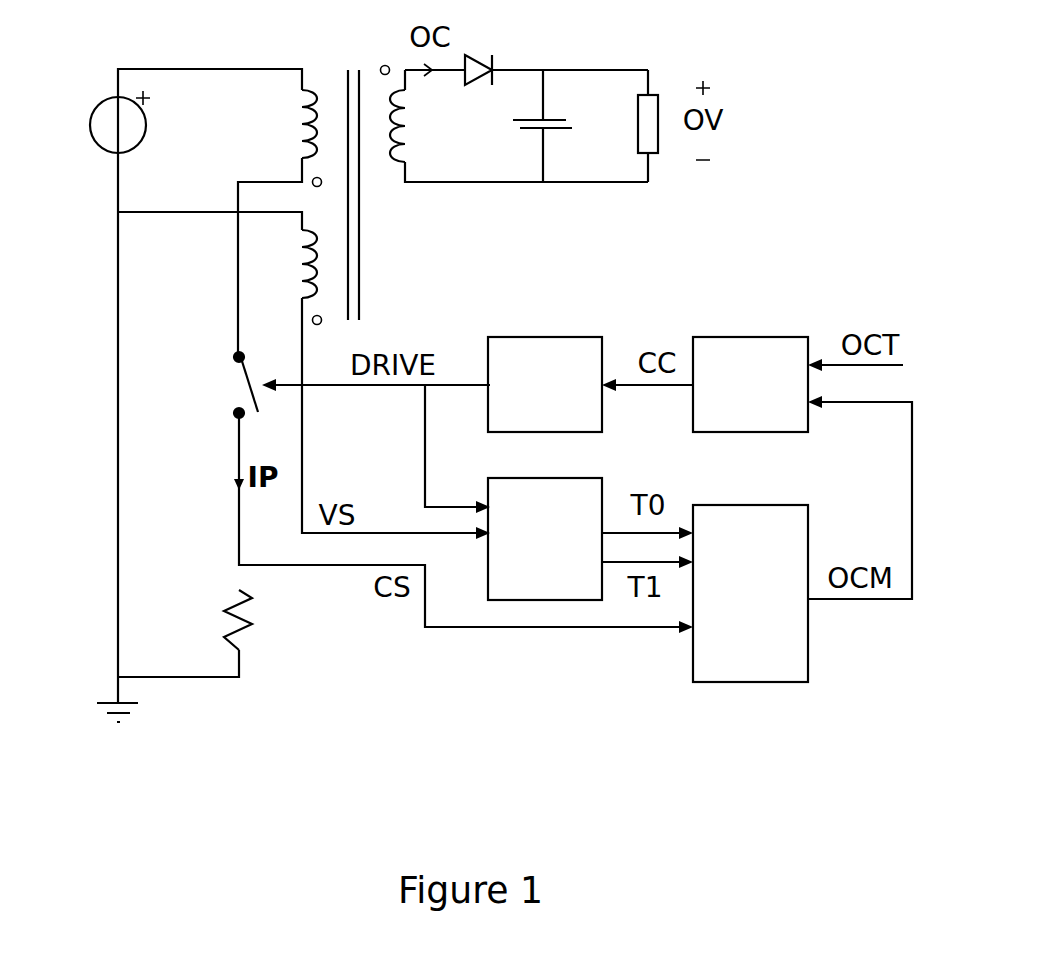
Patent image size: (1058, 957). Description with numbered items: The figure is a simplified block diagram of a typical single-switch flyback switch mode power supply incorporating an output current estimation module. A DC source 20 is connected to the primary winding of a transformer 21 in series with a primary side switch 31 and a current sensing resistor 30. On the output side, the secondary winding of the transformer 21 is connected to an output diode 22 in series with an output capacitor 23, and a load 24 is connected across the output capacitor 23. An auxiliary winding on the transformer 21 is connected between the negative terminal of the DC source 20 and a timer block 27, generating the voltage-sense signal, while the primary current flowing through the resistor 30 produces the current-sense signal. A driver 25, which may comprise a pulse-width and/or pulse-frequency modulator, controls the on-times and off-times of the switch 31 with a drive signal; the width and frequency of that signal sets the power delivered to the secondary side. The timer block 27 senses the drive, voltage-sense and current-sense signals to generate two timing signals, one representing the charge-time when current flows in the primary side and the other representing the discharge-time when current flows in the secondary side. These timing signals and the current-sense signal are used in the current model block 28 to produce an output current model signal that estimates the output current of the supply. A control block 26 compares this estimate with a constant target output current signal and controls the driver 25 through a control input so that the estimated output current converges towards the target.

The DC source 20 is at (96, 122).
The transformer 21 is at (353, 178).
The output diode 22 is at (497, 53).
The output capacitor 23 is at (524, 126).
The load 24 is at (625, 126).
The driver 25 is at (545, 364).
The control block 26 is at (750, 364).
The timer block 27 is at (545, 520).
The current model block 28 is at (750, 575).
The current sensing resistor 30 is at (259, 620).
The primary side switch 31 is at (225, 385).